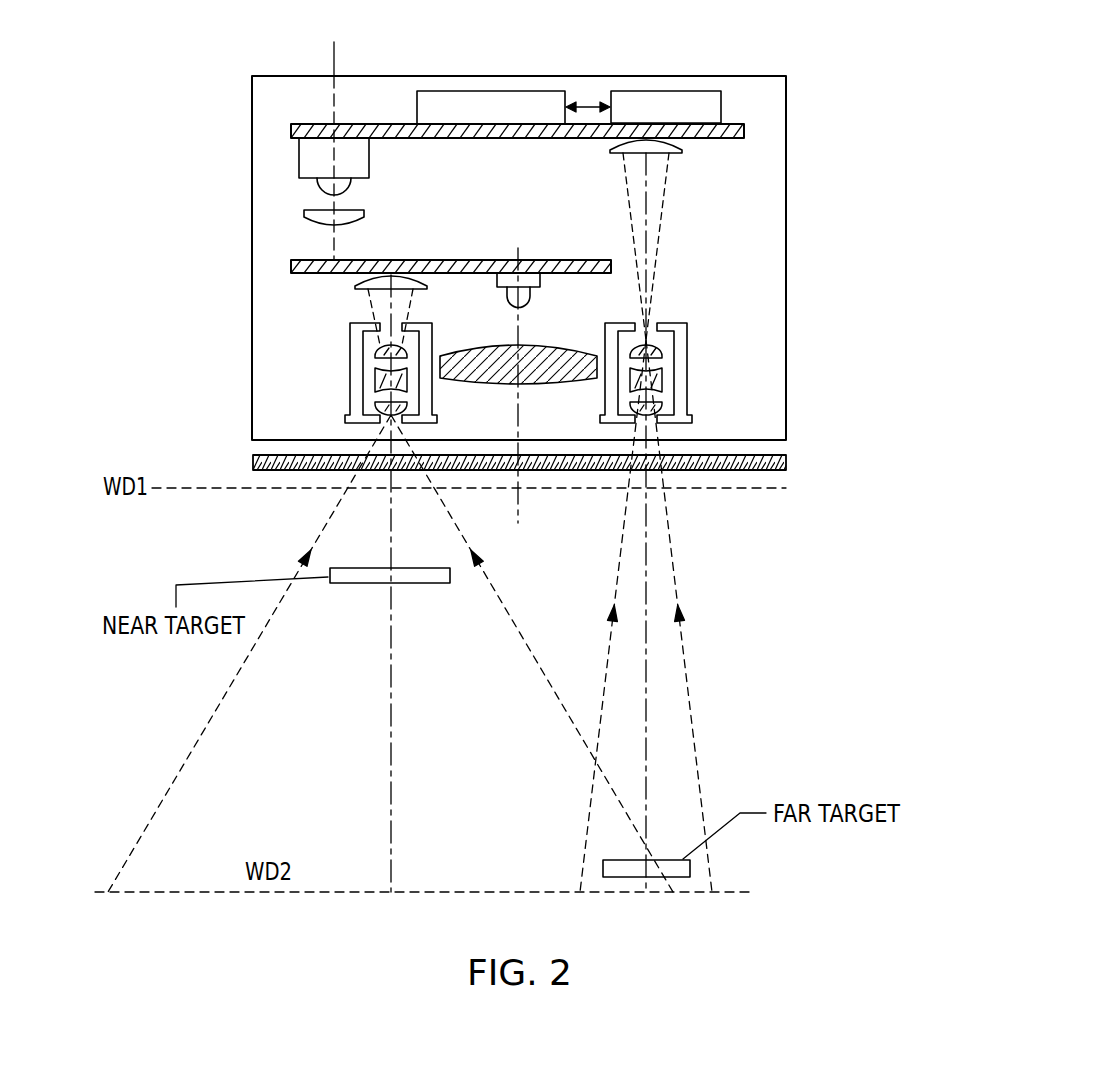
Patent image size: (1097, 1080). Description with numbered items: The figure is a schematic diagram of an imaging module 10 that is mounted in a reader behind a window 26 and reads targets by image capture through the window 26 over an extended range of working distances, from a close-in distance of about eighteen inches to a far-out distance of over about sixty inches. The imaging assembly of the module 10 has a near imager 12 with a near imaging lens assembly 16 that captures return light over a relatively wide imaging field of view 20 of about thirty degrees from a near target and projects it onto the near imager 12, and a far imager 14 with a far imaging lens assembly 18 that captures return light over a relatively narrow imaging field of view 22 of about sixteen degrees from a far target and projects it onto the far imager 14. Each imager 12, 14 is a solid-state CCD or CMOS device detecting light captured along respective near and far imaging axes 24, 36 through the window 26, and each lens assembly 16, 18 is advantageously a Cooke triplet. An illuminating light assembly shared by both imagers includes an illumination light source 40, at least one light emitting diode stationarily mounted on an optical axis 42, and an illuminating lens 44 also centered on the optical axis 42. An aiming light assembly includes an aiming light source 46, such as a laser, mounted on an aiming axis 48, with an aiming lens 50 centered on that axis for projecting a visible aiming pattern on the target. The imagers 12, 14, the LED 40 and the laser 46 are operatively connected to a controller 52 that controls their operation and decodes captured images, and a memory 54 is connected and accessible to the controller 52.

The imaging module 10 is at (199, 40).
The near imager 12 is at (356, 276).
The far imager 14 is at (682, 150).
The near imaging lens assembly 16 is at (375, 357).
The far imaging lens assembly 18 is at (662, 340).
The wide imaging field of view 20 is at (181, 770).
The narrow imaging field of view 22 is at (682, 637).
The near imaging axis 24 is at (390, 673).
The window 26 is at (253, 462).
The far imaging axis 36 is at (645, 566).
The illumination light source 40 is at (507, 292).
The optical axis 42 is at (517, 510).
The illuminating lens 44 is at (573, 352).
The aiming light source 46 is at (299, 157).
The aiming axis 48 is at (336, 52).
The aiming lens 50 is at (304, 215).
The controller 52 is at (490, 91).
The memory 54 is at (665, 91).